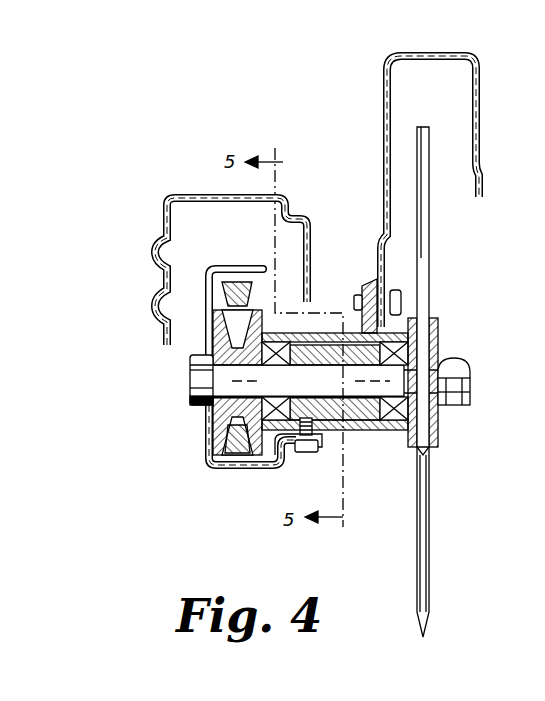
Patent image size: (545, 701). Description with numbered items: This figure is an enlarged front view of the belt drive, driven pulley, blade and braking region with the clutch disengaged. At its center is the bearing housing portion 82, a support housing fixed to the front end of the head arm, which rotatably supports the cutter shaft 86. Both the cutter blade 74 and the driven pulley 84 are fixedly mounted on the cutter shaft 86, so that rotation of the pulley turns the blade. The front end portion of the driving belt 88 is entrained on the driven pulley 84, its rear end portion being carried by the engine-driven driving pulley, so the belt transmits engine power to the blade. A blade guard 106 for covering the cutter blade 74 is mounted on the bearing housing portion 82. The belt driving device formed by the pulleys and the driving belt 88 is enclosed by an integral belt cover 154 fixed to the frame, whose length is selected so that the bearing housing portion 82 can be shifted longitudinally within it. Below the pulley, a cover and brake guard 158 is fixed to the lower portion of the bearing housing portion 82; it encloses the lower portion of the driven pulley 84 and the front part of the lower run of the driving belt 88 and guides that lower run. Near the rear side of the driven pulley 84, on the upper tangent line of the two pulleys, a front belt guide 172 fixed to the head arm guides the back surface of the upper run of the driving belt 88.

The cutter blade 74 is at (429, 590).
The bearing housing portion 82 is at (365, 433).
The driven pulley 84 is at (225, 409).
The cutter shaft 86 is at (469, 379).
The driving belt 88 is at (220, 463).
The blade guard 106 is at (482, 103).
The belt cover 154 is at (183, 198).
The cover and brake guard 158 is at (247, 464).
The front belt guide 172 is at (238, 263).